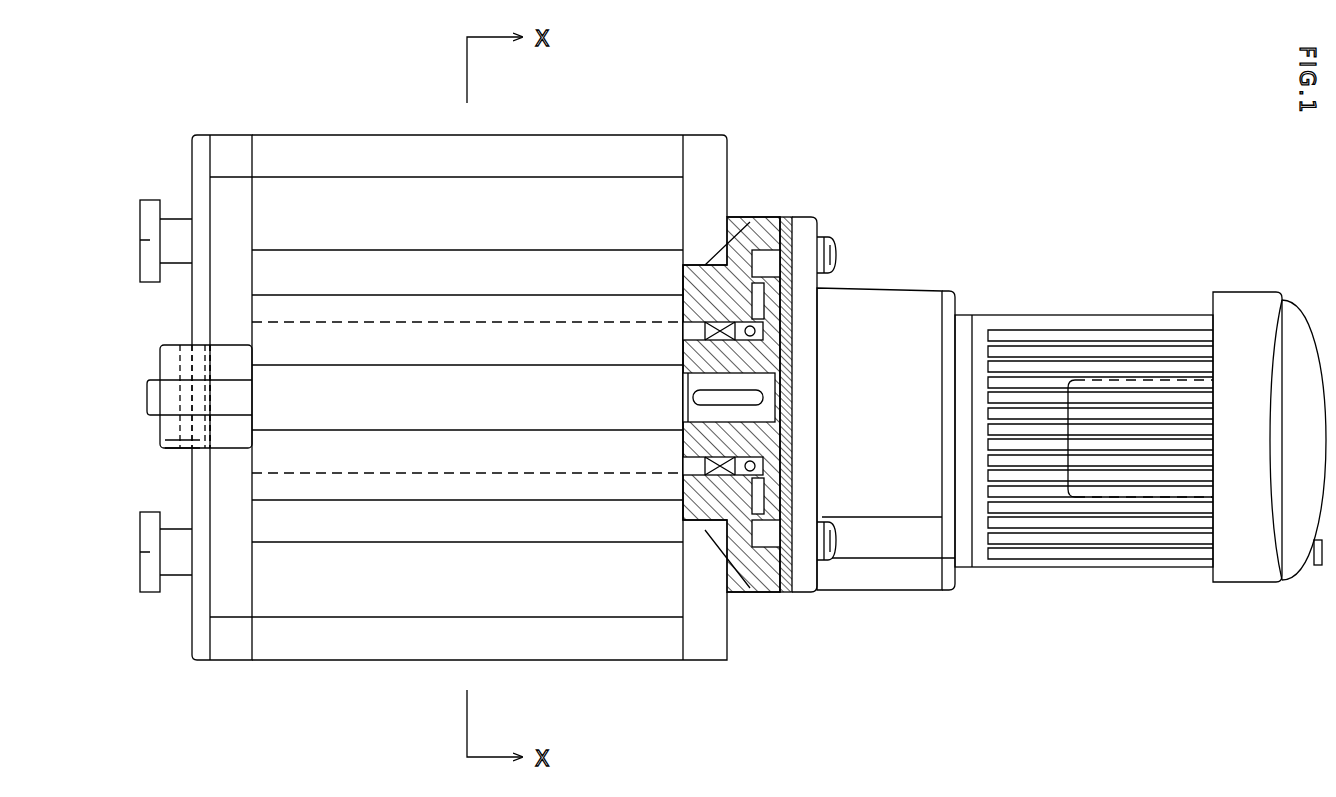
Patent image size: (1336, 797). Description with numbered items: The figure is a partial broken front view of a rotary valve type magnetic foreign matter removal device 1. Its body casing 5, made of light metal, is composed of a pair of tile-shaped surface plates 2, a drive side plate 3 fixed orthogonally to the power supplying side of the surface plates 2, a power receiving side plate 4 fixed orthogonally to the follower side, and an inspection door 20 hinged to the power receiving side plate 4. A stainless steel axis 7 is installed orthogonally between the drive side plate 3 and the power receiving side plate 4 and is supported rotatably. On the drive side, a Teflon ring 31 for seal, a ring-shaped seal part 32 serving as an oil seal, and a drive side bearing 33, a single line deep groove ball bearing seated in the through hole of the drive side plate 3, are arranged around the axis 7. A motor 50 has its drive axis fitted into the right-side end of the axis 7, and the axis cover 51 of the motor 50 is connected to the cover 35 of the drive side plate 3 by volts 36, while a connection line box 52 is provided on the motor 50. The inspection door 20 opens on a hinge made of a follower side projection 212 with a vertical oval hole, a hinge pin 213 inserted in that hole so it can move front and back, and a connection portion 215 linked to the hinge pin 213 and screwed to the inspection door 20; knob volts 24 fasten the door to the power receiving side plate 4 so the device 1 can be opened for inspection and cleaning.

The rotary valve type magnetic foreign matter removal device 1 is at (910, 146).
The surface plate 2 is at (398, 155).
The drive side plate 3 is at (700, 155).
The power receiving side plate 4 is at (228, 155).
The body casing 5 is at (333, 108).
The axis 7 is at (805, 592).
The inspection door 20 is at (202, 190).
The knob volt 24 is at (152, 242).
The ring for seal 31 is at (683, 262).
The ring-shaped seal part 32 is at (715, 545).
The drive side bearing 33 is at (758, 592).
The cover 35 is at (776, 228).
The volt 36 is at (828, 246).
The motor 50 is at (1035, 325).
The axis cover 51 is at (910, 300).
The connection line box 52 is at (1135, 360).
The follower side projection 212 is at (160, 360).
The hinge pin 213 is at (177, 453).
The connection portion 215 is at (150, 398).